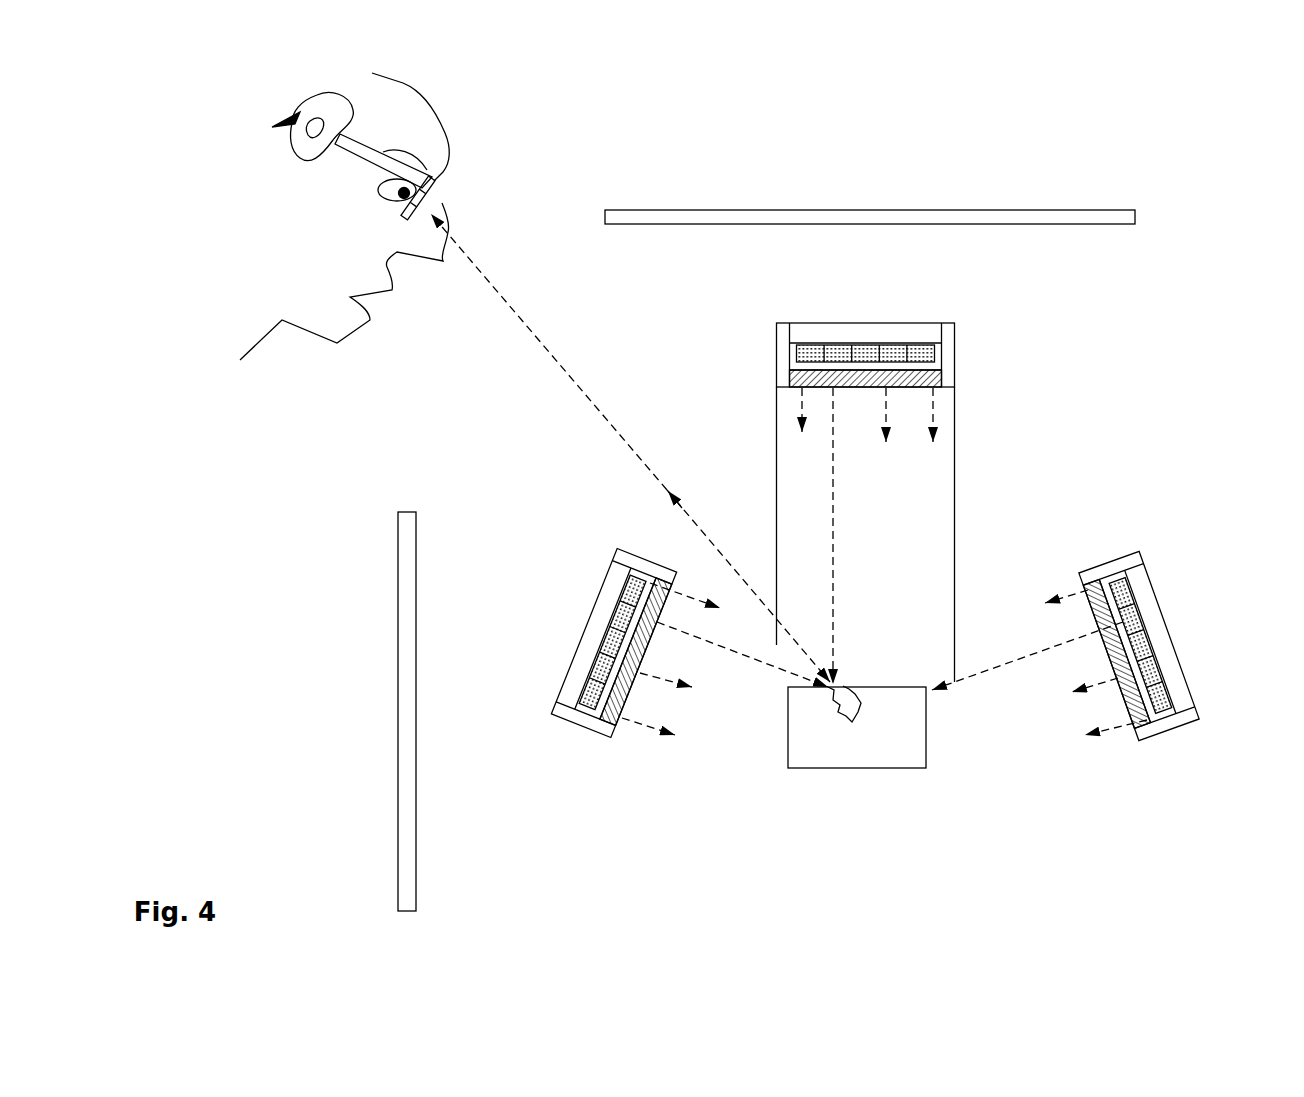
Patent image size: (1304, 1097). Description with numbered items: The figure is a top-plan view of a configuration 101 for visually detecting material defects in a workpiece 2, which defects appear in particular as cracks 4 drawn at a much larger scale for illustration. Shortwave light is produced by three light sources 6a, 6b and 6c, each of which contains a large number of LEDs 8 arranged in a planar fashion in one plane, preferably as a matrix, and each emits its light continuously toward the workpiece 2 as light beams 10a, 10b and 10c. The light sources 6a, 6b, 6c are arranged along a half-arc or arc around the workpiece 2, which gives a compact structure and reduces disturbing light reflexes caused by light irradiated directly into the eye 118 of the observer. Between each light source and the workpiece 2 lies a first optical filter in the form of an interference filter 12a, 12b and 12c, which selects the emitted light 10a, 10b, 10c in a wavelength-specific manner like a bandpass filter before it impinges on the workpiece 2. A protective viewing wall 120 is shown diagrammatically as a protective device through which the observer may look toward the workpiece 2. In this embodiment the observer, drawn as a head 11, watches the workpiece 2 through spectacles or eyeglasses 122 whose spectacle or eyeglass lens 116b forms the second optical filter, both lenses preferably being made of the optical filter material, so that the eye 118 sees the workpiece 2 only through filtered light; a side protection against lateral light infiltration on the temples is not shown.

The workpiece 2 is at (880, 753).
The cracks 4 is at (838, 707).
The light source 6a is at (568, 663).
The light source 6b is at (894, 300).
The light source 6c is at (1190, 633).
The LEDs 8 is at (867, 350).
The light beam 10a is at (730, 648).
The light beam 10b is at (833, 428).
The light beam 10c is at (995, 668).
The user / observer 11 is at (418, 215).
The interference filter 12a is at (640, 682).
The interference filter 12b is at (903, 394).
The interference filter 12c is at (1115, 694).
The configuration 101 is at (1075, 146).
The spectacle or eyeglass lens 116b is at (435, 185).
The eye 118 is at (365, 203).
The protective viewing wall 120 is at (888, 215).
The spectacles or eyeglasses 122 is at (367, 142).